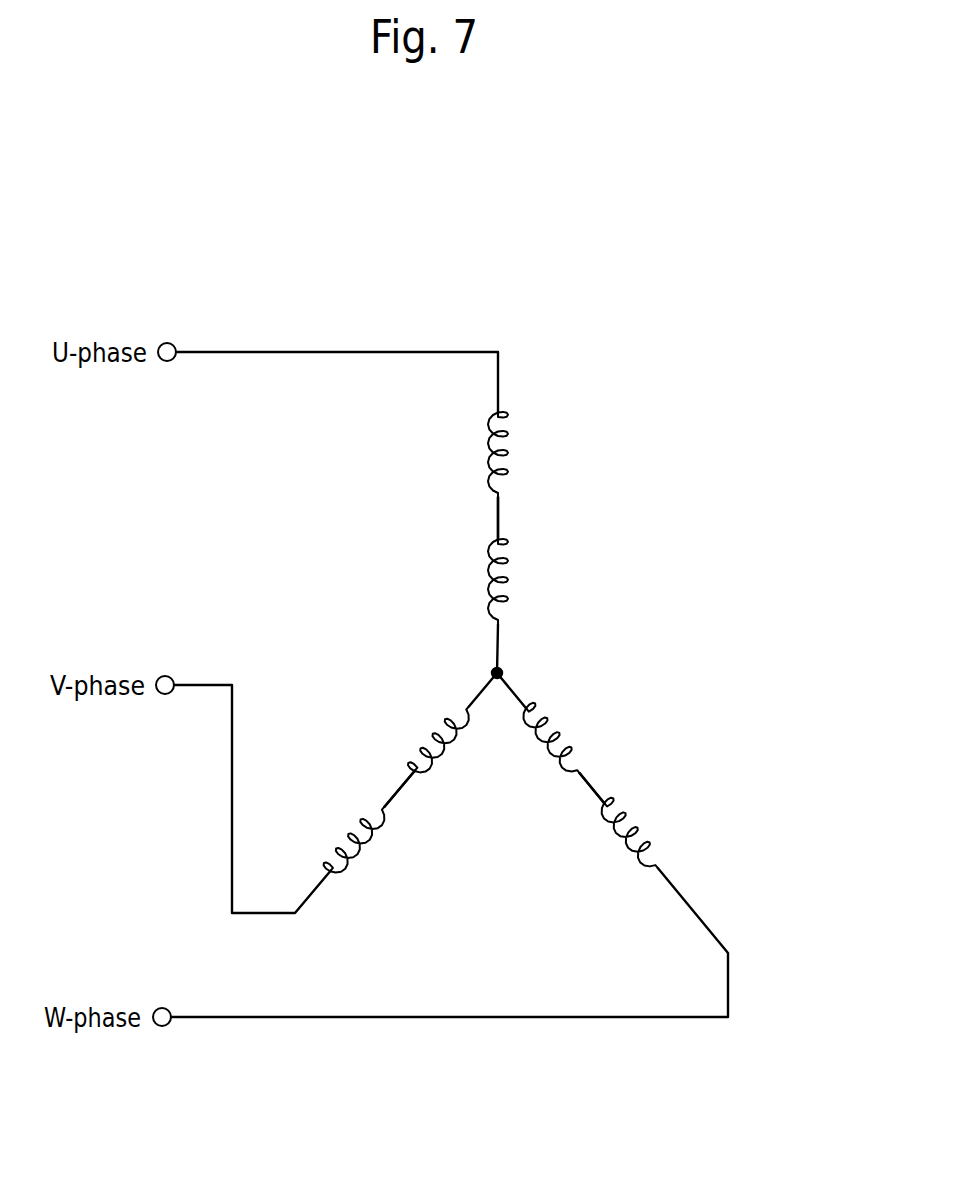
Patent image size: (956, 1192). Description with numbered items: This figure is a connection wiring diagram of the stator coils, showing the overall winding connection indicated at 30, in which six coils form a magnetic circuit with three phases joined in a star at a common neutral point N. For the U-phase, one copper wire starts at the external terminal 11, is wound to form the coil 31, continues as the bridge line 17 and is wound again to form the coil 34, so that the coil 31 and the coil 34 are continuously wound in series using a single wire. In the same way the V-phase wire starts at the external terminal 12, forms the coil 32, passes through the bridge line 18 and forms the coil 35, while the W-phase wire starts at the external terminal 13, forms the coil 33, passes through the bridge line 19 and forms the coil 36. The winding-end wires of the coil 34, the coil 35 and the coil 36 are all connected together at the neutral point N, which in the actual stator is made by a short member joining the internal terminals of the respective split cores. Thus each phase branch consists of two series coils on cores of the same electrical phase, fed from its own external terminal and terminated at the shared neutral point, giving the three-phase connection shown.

The external terminal 11 is at (174, 344).
The external terminal 12 is at (172, 677).
The external terminal 13 is at (170, 1009).
The bridge line 17 is at (483, 523).
The bridge line 18 is at (412, 801).
The bridge line 19 is at (586, 802).
The motor stator winding (star connection) 30 is at (506, 684).
The coil 31 is at (540, 455).
The coil 32 is at (337, 819).
The coil 33 is at (666, 821).
The coil 34 is at (542, 584).
The coil 35 is at (417, 714).
The coil 36 is at (584, 719).